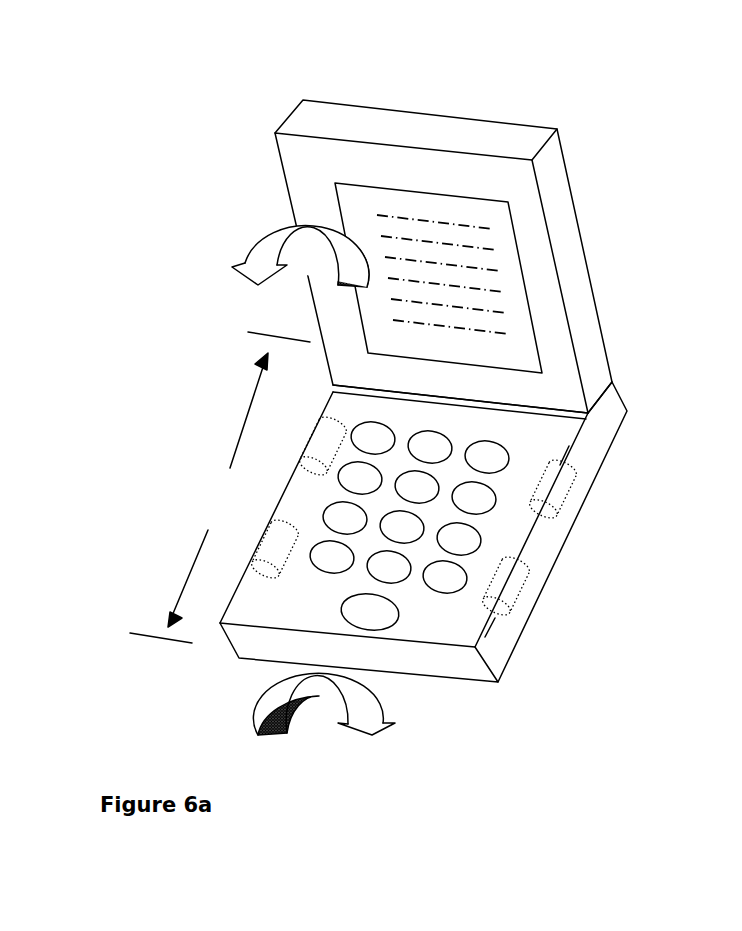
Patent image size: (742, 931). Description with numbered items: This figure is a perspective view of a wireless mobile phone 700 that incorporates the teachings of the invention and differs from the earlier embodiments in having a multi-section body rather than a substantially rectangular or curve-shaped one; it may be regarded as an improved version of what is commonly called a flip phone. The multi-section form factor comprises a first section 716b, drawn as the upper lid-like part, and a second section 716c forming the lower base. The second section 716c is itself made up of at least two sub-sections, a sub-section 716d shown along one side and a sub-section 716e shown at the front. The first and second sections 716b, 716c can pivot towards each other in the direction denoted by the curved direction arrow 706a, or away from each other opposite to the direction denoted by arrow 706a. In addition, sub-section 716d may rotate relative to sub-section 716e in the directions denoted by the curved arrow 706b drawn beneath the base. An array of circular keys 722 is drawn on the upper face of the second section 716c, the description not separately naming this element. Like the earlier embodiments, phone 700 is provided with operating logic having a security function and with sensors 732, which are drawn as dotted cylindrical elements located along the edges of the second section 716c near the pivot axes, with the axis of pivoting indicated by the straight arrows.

The phone 700 is at (207, 94).
The direction arrow 706a is at (300, 268).
The direction arrow 706b is at (324, 721).
The first section 716b is at (325, 117).
The second section 716c is at (300, 450).
The sub-section 716d is at (603, 402).
The sub-section 716e is at (495, 633).
The keypad 722 is at (365, 633).
The sensors 732 is at (297, 450).